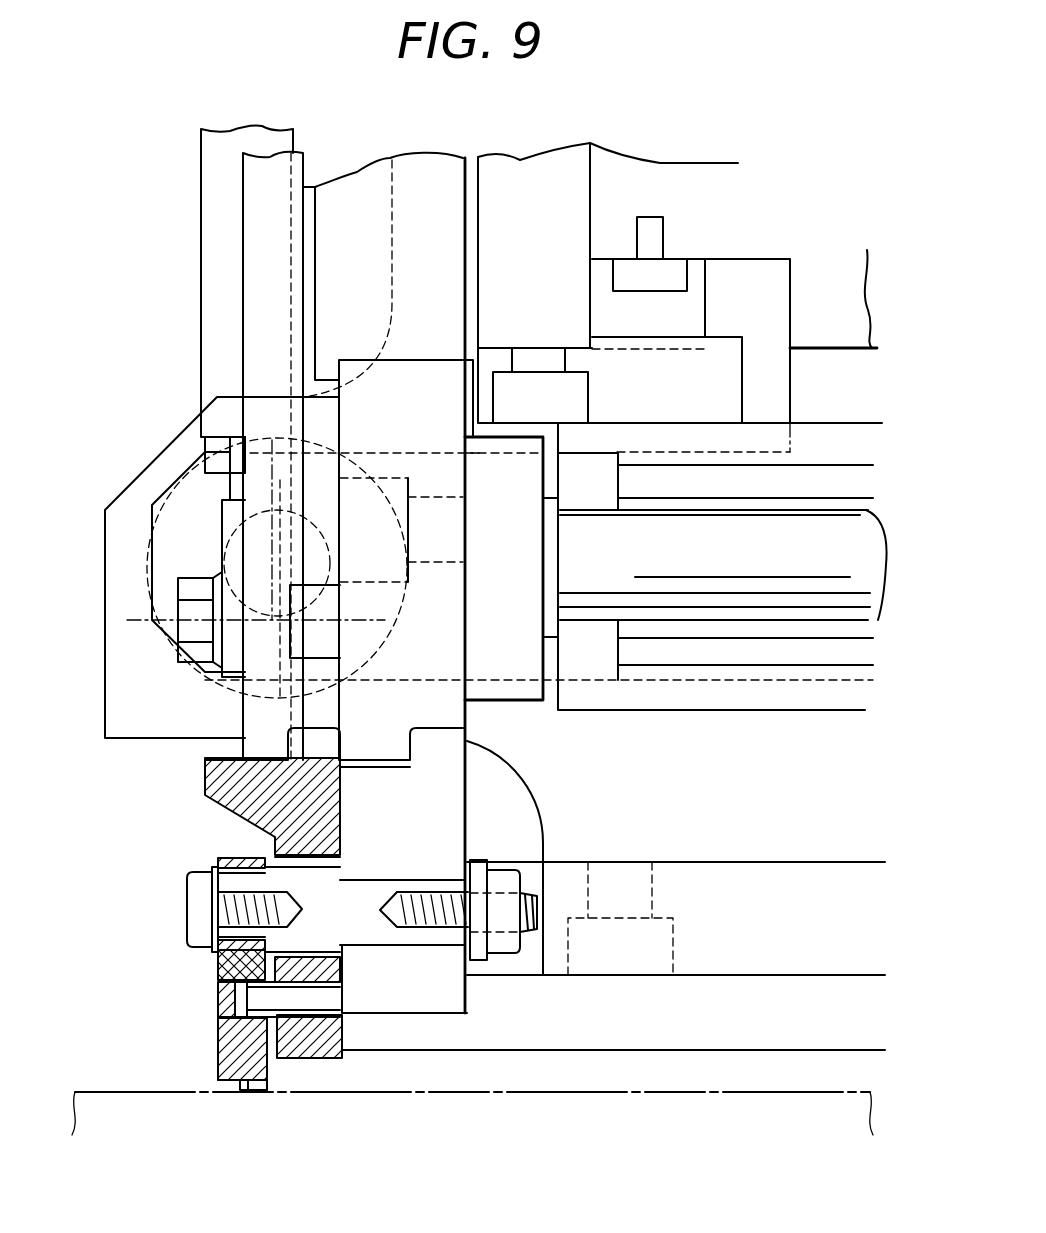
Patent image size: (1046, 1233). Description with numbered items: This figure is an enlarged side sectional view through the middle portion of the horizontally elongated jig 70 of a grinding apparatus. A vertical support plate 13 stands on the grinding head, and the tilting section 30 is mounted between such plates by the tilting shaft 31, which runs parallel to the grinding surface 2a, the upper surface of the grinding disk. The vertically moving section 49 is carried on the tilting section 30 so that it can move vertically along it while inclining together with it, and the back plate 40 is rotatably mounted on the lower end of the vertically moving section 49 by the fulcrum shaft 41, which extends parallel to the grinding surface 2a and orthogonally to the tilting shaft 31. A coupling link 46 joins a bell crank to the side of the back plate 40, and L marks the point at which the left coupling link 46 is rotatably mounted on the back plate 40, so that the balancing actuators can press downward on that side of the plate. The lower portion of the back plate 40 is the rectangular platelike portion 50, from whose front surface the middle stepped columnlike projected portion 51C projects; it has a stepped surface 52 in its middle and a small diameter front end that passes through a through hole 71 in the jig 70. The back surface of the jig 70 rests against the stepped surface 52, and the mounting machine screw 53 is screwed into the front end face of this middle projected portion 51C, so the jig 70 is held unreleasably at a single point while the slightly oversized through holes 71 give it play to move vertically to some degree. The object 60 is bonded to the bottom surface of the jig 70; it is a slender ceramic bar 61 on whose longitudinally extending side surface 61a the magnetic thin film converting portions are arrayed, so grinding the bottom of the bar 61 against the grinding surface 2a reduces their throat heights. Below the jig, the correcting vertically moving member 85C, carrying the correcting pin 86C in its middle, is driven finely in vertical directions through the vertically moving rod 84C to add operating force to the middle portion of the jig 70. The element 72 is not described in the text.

The grinding surface 2a is at (778, 1080).
The vertical support plate 13 is at (157, 458).
The tilting section 30 is at (837, 336).
The tilting shaft 31 is at (370, 417).
The back plate 40 is at (467, 718).
The fulcrum shaft 41 is at (745, 605).
The coupling link 46 is at (201, 305).
The vertically moving section 49 is at (538, 165).
The rectangular platelike portion 50 is at (440, 1002).
The stepped columnlike projected portion 51C is at (233, 880).
The stepped surface 52 is at (217, 982).
The mounting machine screw 53 is at (193, 922).
The object 60 is at (253, 1087).
The ceramic bar 61 is at (235, 1085).
The longitudinally extending side surface 61a is at (267, 1085).
The horizontally elongated jig 70 is at (218, 1060).
The through hole 71 is at (217, 965).
The nut 72 is at (218, 1030).
The vertically moving rod 84C is at (243, 222).
The correcting vertically moving member 85C is at (325, 1053).
The correcting pin 86C is at (217, 997).
The mounting point L is at (133, 620).